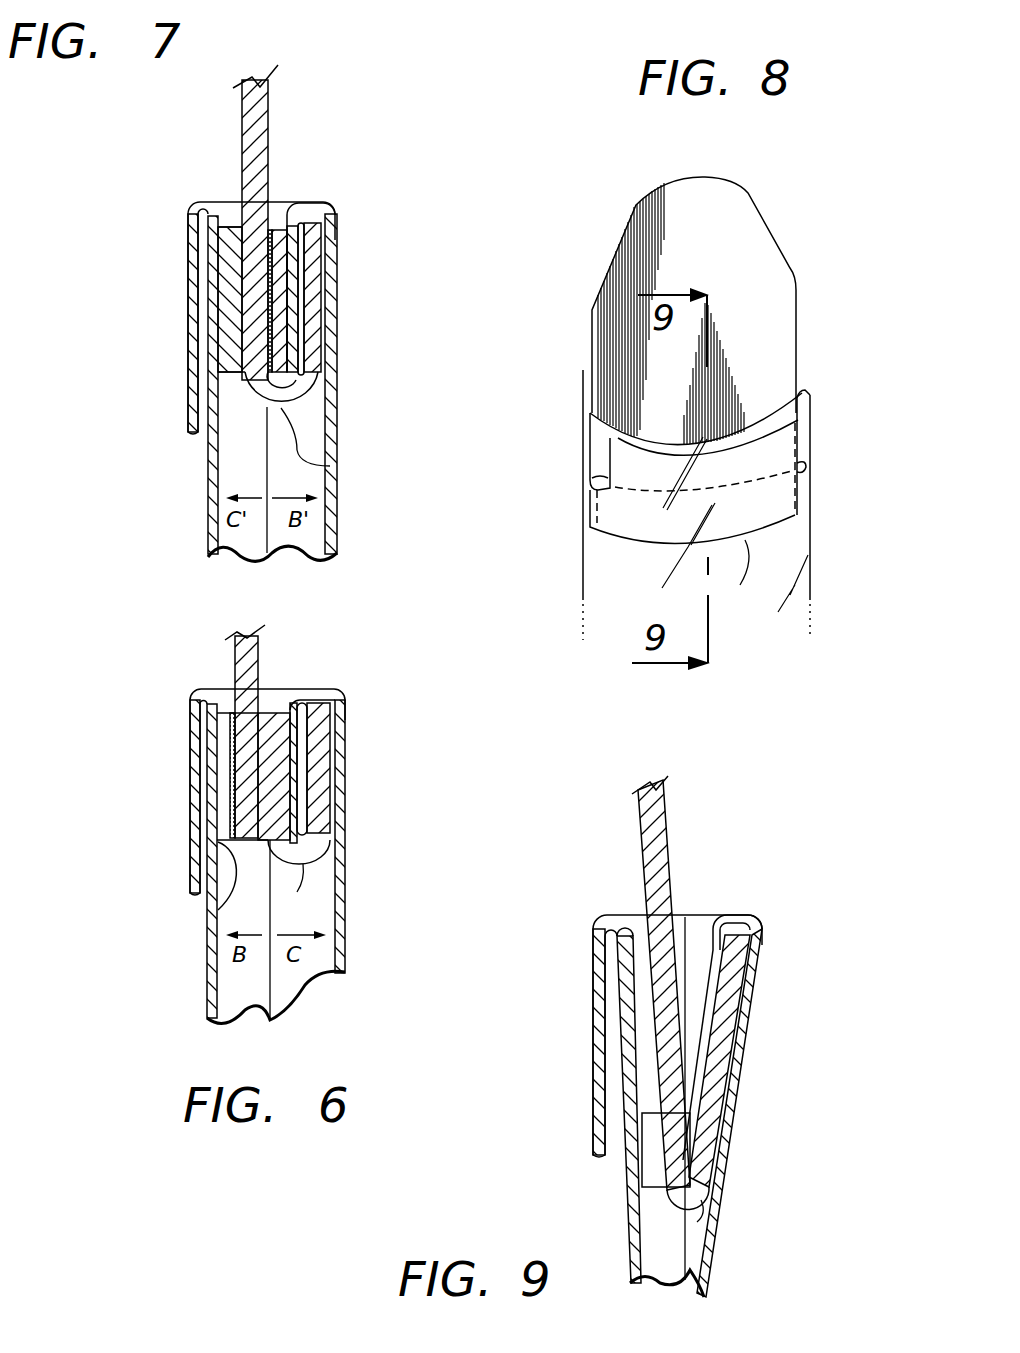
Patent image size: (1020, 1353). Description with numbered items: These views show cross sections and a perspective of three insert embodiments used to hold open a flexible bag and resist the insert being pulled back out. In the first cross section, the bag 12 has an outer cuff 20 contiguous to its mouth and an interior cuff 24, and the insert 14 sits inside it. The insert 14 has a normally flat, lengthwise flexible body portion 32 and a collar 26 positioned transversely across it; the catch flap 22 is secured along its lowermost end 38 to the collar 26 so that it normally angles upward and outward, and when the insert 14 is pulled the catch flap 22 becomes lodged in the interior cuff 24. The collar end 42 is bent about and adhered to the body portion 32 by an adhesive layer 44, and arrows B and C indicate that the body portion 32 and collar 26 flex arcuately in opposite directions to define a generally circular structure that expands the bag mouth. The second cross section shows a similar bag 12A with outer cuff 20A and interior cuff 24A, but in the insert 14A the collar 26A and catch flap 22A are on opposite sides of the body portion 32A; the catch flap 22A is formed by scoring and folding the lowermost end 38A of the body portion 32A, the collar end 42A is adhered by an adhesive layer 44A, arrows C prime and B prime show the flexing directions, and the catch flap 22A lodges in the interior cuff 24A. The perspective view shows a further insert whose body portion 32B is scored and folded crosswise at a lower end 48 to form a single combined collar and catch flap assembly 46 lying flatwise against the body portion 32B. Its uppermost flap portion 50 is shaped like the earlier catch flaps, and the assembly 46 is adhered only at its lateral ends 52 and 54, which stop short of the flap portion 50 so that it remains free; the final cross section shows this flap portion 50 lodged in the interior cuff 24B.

In FIG. 6, the bag 12 is at (350, 882).
In FIG. 7, the bag 12A is at (342, 430).
In FIG. 6, the insert 14 is at (265, 809).
In FIG. 7, the insert 14A is at (259, 313).
In FIG. 6, the outer cuff 20 is at (195, 828).
In FIG. 7, the outer cuff 20A is at (196, 375).
In FIG. 6, the catch flap 22 is at (313, 762).
In FIG. 7, the catch flap 22A is at (308, 278).
In FIG. 6, the interior cuff 24 is at (298, 740).
In FIG. 7, the interior cuff 24A is at (298, 362).
In FIG. 9, the interior cuff 24B is at (706, 958).
In FIG. 6, the collar 26 is at (278, 732).
In FIG. 7, the collar 26A is at (222, 302).
In FIG. 6, the insert body portion 32 is at (258, 648).
In FIG. 7, the insert body portion 32A is at (278, 168).
In FIG. 8, the insert body portion 32B is at (762, 290).
In FIG. 9, the insert body portion 32B is at (668, 828).
In FIG. 6, the lowermost end 38 is at (301, 891).
In FIG. 7, the lowermost end 38A is at (330, 466).
In FIG. 6, the collar end 42 is at (225, 912).
In FIG. 7, the collar end 42A is at (278, 250).
In FIG. 6, the adhesive layer 44 is at (242, 762).
In FIG. 8, the adhesive layer 44 is at (694, 403).
In FIG. 7, the adhesive layer 44A is at (278, 330).
In FIG. 8, the combined collar and catch flap assembly 46 is at (820, 496).
In FIG. 9, the combined collar and catch flap assembly 46 is at (735, 1100).
In FIG. 8, the lower end 48 is at (751, 577).
In FIG. 9, the lower end 48 is at (697, 1222).
In FIG. 8, the flap portion 50 is at (800, 432).
In FIG. 9, the flap portion 50 is at (722, 1012).
In FIG. 8, the lateral end 52 is at (590, 500).
In FIG. 8, the lateral end 54 is at (808, 470).